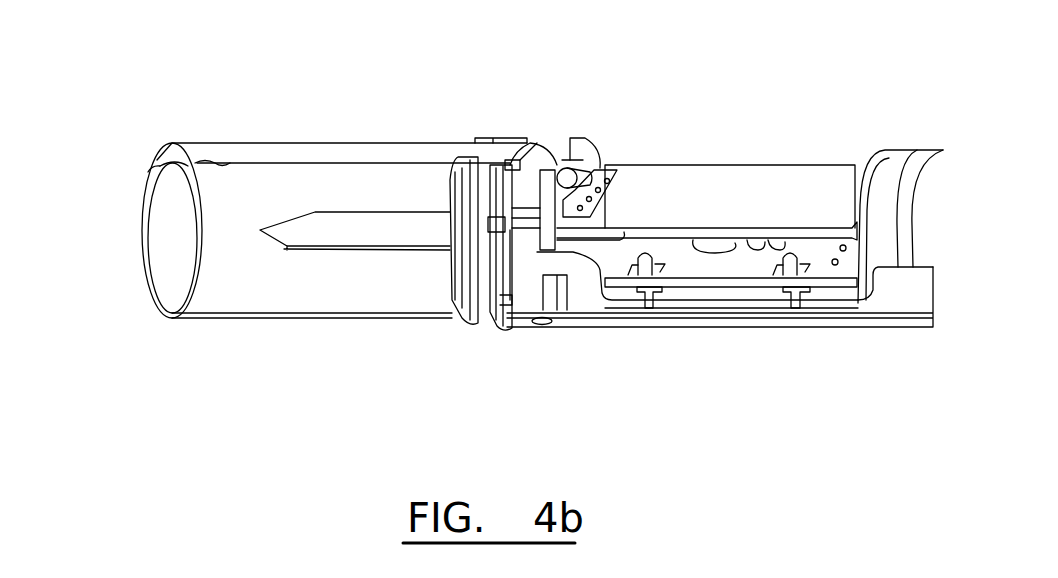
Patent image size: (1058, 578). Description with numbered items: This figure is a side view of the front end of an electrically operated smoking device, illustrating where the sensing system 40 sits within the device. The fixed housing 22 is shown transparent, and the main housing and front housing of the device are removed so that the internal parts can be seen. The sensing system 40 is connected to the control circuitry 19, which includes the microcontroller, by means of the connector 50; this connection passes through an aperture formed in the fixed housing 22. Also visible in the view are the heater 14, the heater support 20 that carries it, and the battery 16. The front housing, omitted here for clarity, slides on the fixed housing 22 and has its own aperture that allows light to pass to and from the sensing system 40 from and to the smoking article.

The heater 14 is at (347, 230).
The battery 16 is at (895, 158).
The control circuitry 19 is at (735, 190).
The heater support 20 is at (520, 193).
The fixed housing 22 is at (218, 313).
The sensing system 40 is at (143, 170).
The connector 50 is at (363, 153).